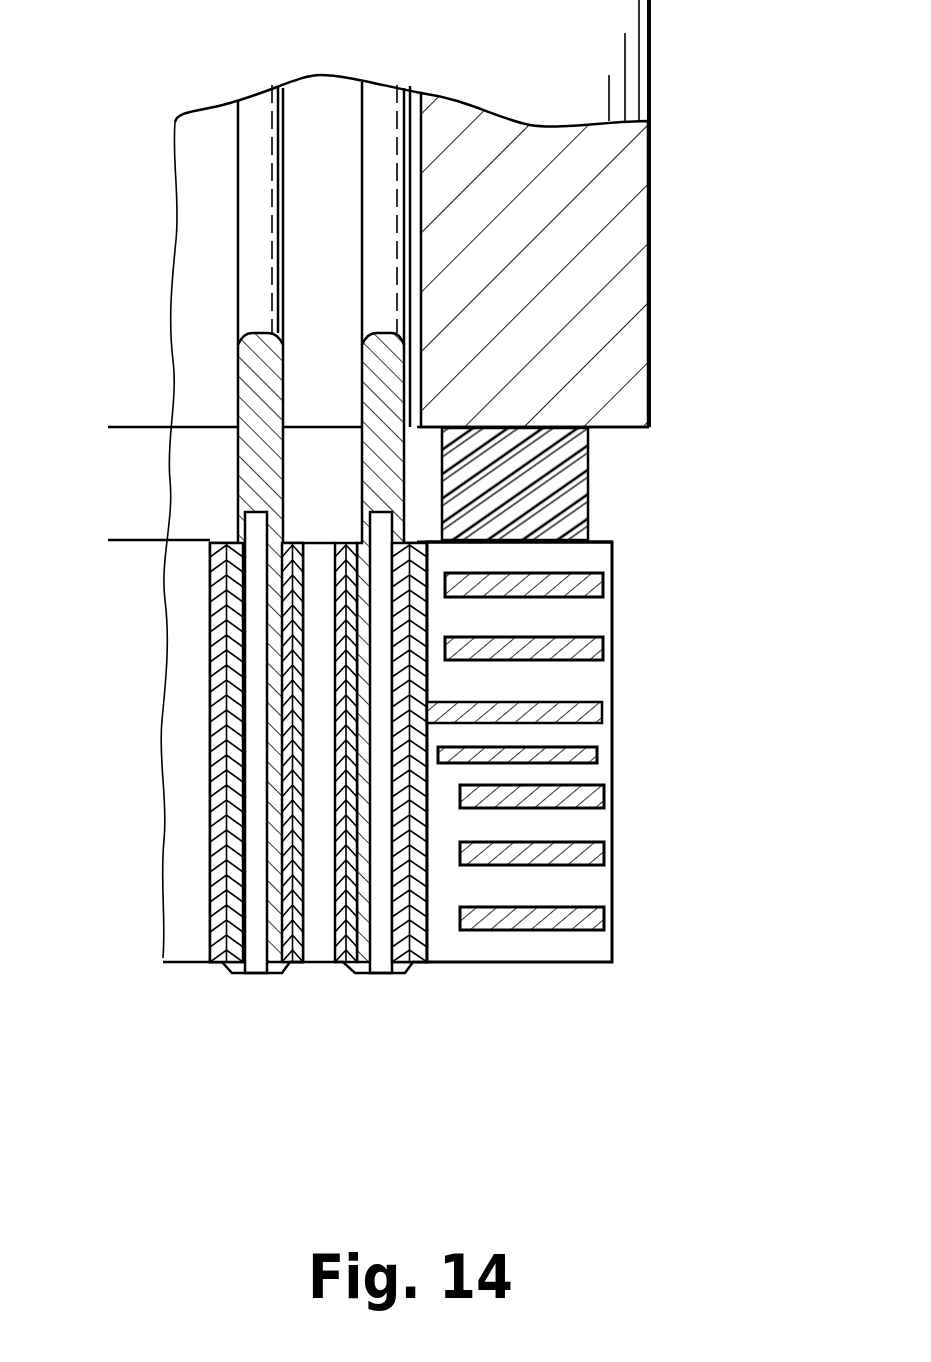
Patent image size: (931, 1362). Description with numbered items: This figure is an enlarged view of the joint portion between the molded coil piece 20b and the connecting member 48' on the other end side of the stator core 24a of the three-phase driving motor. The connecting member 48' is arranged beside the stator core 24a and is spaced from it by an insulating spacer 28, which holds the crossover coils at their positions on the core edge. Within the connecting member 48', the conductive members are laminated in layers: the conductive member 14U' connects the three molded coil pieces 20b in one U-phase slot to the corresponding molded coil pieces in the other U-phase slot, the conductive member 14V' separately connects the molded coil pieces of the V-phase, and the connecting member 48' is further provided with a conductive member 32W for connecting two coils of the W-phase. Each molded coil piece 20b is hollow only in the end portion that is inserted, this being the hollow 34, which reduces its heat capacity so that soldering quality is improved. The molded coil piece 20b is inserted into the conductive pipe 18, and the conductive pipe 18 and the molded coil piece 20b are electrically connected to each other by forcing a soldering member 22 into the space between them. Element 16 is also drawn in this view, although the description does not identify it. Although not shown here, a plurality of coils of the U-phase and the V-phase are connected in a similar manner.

The stator core 24a is at (550, 318).
The insulating spacer 28 is at (523, 487).
The conductive member 14U' is at (626, 636).
The conductive member 32W is at (600, 748).
The conductive member 14V' is at (633, 857).
The stator core 16 is at (600, 943).
The connecting member 48' is at (123, 565).
The hollow 34 is at (255, 968).
The soldering member 22 is at (287, 973).
The molded coil piece 20b is at (365, 973).
The conductive pipe 18 is at (421, 962).